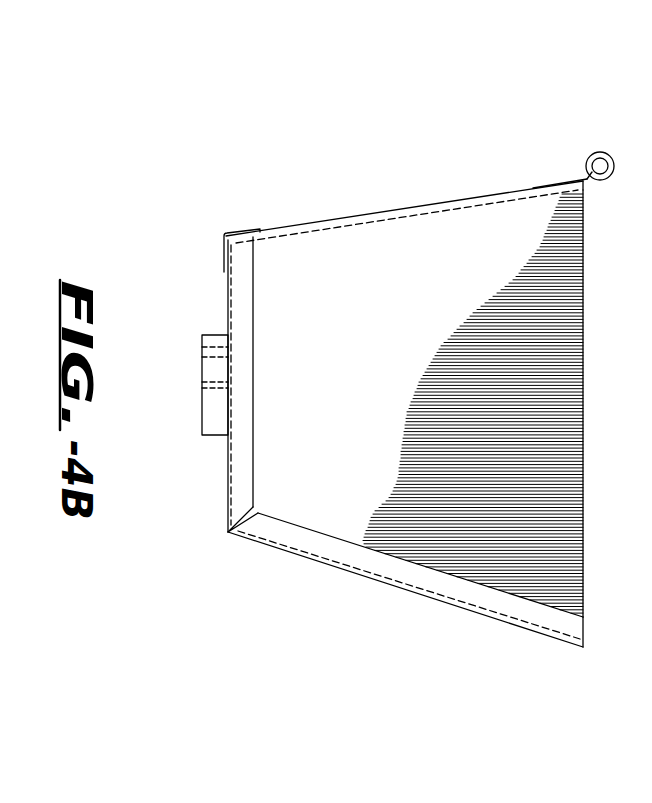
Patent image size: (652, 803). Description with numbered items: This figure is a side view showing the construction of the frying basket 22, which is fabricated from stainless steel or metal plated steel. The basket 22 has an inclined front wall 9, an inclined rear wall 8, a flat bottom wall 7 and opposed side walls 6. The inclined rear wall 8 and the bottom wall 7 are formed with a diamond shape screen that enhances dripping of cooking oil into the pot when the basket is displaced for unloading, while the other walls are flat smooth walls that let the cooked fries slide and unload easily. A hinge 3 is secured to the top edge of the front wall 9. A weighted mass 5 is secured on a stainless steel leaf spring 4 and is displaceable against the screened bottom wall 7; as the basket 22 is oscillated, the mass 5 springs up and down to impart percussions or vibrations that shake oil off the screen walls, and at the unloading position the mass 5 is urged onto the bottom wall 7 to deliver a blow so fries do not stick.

The hinge 3 is at (598, 152).
The leaf spring 4 is at (228, 290).
The weighted mass 5 is at (215, 410).
The side walls 6 is at (413, 208).
The bottom wall 7 is at (228, 500).
The rear wall 8 is at (319, 562).
The front wall 9 is at (318, 252).
The frying basket 22 is at (597, 417).